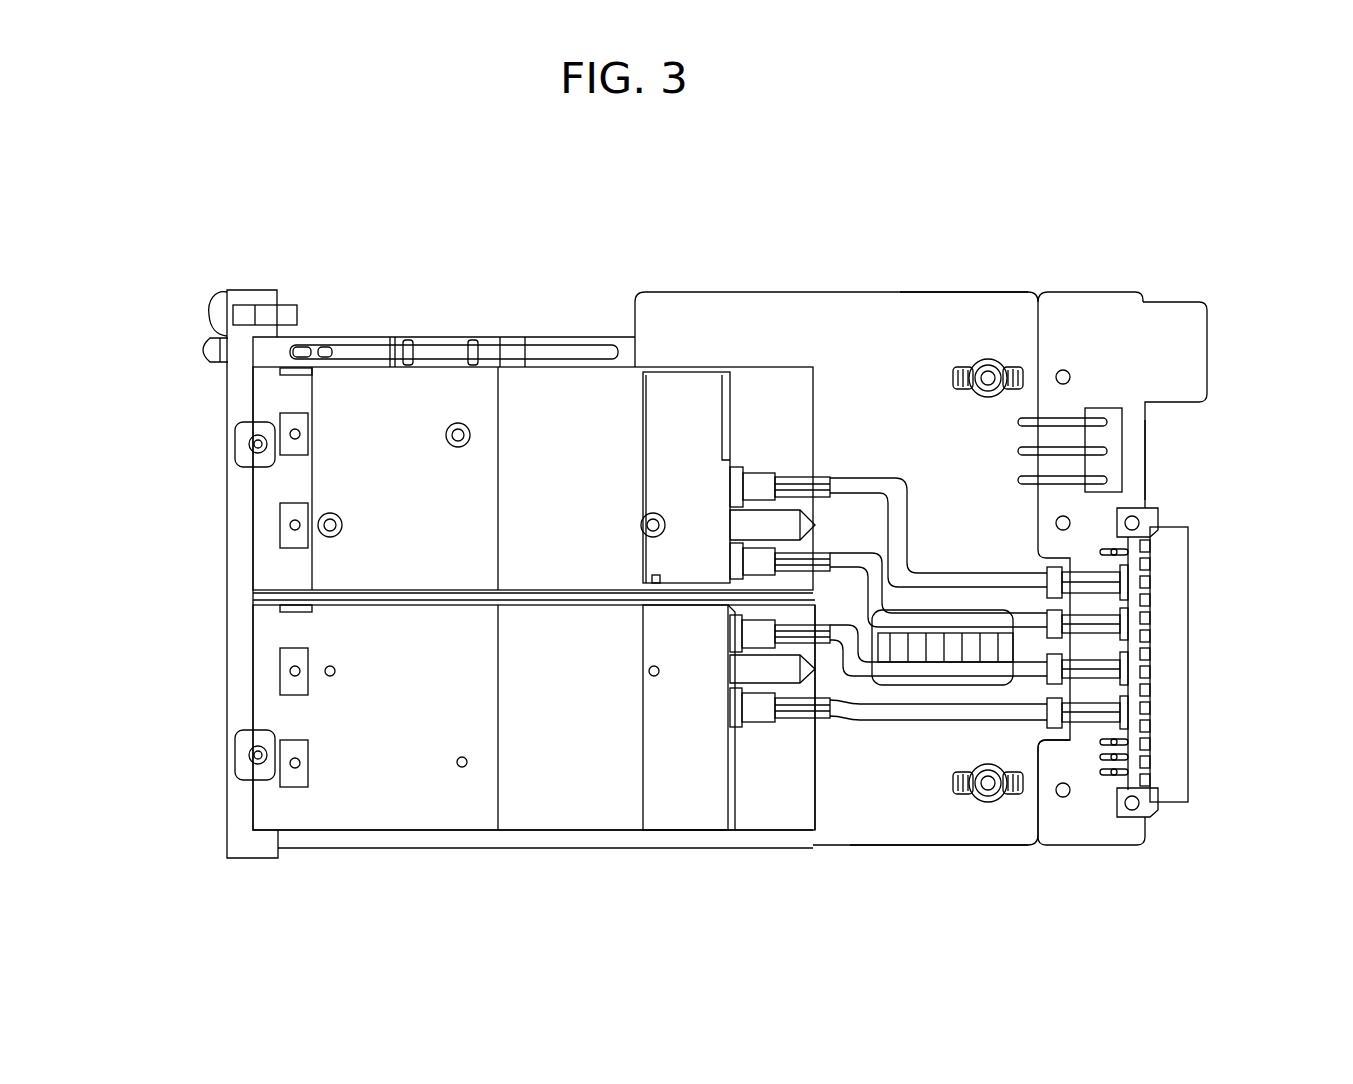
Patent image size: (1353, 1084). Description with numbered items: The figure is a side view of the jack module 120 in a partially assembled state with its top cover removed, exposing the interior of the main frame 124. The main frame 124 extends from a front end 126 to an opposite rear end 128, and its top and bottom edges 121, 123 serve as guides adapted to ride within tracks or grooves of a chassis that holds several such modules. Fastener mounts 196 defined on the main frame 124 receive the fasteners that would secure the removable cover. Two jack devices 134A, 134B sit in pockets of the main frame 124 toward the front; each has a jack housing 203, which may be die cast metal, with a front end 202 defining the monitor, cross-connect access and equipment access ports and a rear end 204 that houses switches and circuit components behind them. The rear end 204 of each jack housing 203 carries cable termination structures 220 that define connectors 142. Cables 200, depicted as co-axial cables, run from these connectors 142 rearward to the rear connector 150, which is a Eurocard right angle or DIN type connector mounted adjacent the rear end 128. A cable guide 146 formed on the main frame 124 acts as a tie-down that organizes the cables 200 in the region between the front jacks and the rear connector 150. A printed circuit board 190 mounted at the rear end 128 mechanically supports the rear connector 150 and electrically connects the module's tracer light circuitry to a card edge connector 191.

The jack module 120 is at (432, 265).
The top edge 121 is at (968, 292).
The bottom edge 123 is at (887, 848).
The main frame 124 is at (890, 290).
The front end 126 is at (205, 484).
The rear end 128 is at (1185, 458).
The jack device 134A is at (703, 360).
The jack device 134B is at (656, 848).
The connectors 142 is at (802, 462).
The cable guide 146 is at (923, 652).
The rear connector 150 is at (1180, 655).
The printed circuit board 190 is at (1098, 315).
The card edge connector 191 is at (1180, 338).
The fastener mounts 196 is at (980, 365).
The cables 200 is at (987, 717).
The front end 202 is at (228, 650).
The jack housing 203 is at (518, 795).
The rear end 204 is at (822, 802).
The cable termination structures 220 is at (752, 482).